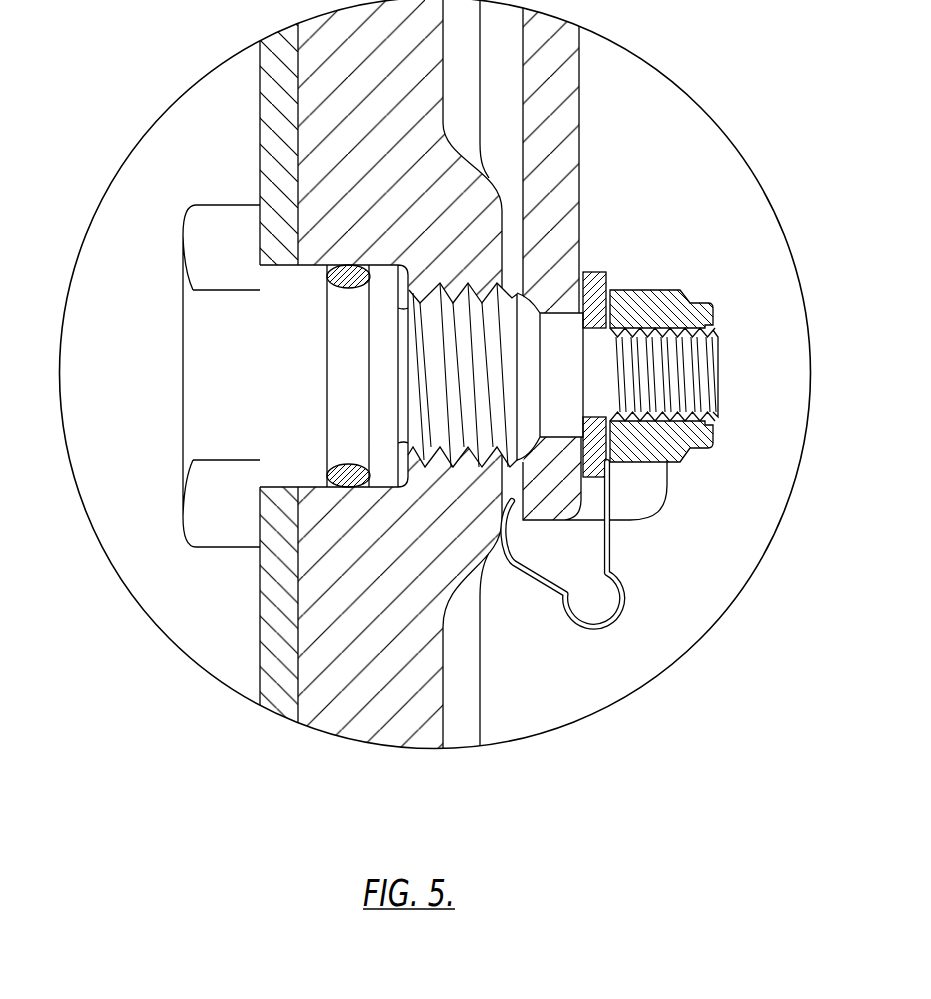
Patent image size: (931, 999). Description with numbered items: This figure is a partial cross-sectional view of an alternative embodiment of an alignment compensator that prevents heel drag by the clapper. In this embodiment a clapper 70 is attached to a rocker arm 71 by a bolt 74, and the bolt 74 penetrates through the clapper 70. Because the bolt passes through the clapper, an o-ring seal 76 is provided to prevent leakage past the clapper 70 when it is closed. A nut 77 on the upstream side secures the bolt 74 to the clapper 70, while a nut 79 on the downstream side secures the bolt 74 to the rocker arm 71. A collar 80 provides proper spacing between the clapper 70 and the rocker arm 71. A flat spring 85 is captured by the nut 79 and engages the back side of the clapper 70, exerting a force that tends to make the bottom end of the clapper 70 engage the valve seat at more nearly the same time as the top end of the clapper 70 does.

The clapper 70 is at (343, 712).
The rocker arm 71 is at (725, 353).
The bolt 74 is at (490, 314).
The o-ring seal 76 is at (345, 487).
The nut 77 is at (212, 508).
The nut 79 is at (663, 443).
The collar 80 is at (525, 345).
The flat spring 85 is at (626, 596).